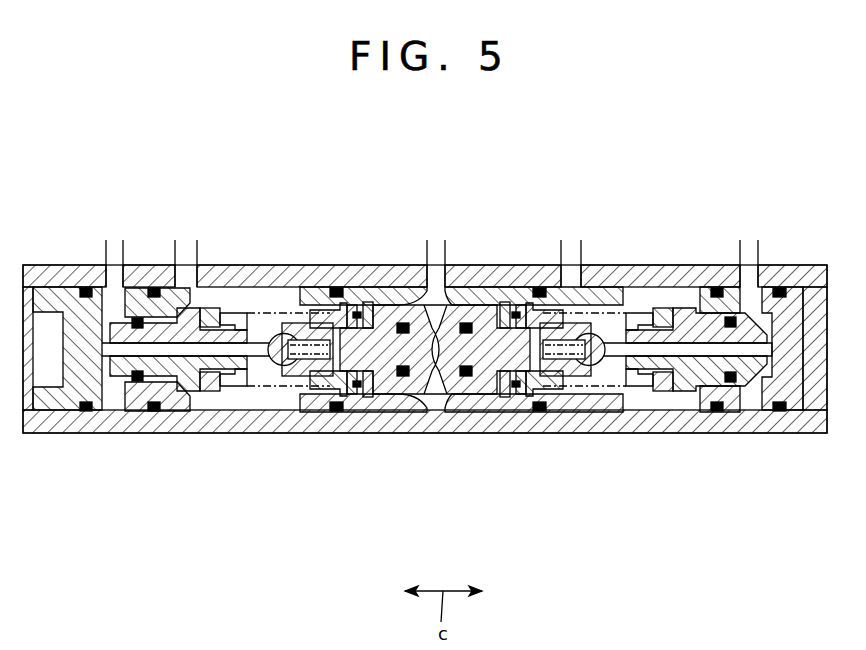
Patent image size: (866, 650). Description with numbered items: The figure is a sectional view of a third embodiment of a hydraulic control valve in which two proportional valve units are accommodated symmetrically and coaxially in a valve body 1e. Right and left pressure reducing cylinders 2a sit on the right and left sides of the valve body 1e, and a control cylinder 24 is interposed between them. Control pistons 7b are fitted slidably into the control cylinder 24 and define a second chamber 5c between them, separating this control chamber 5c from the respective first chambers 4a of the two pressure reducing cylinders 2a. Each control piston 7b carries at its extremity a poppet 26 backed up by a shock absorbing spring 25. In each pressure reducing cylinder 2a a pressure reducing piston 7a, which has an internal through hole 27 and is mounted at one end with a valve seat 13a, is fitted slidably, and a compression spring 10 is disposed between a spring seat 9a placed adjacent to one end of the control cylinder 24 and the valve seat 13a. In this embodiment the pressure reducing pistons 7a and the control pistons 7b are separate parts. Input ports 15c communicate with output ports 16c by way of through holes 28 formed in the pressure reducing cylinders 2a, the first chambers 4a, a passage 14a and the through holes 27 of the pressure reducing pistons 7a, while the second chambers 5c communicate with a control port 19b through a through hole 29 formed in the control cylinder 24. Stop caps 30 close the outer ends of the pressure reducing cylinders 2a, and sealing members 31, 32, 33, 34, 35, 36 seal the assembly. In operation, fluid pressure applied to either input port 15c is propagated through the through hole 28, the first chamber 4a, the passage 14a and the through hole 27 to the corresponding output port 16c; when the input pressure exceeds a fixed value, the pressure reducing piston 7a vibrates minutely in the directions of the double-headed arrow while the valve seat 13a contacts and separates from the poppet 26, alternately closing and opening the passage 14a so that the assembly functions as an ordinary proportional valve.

The valve body 1e is at (788, 264).
The pressure reducing cylinder 2a is at (302, 318).
The first chamber 4a is at (283, 305).
The second chamber 5c is at (416, 265).
The pressure reducing piston 7a is at (129, 265).
The control piston 7b is at (379, 435).
The spring seat 9a is at (367, 300).
The compression spring 10 is at (283, 435).
The valve seat 13a is at (232, 435).
The passage 14a is at (246, 312).
The input port 15c is at (185, 250).
The output port 16c is at (112, 250).
The control port 19b is at (436, 250).
The control cylinder 24 is at (437, 435).
The shock absorbing spring 25 is at (312, 435).
The poppet 26 is at (265, 435).
The through hole 27 is at (178, 356).
The through hole 28 is at (266, 312).
The through hole 29 is at (450, 265).
The stop cap 30 is at (70, 266).
The sealing member 31 is at (75, 435).
The sealing member 32 is at (118, 435).
The sealing member 33 is at (152, 435).
The sealing member 34 is at (213, 435).
The sealing member 35 is at (338, 435).
The sealing member 36 is at (411, 435).